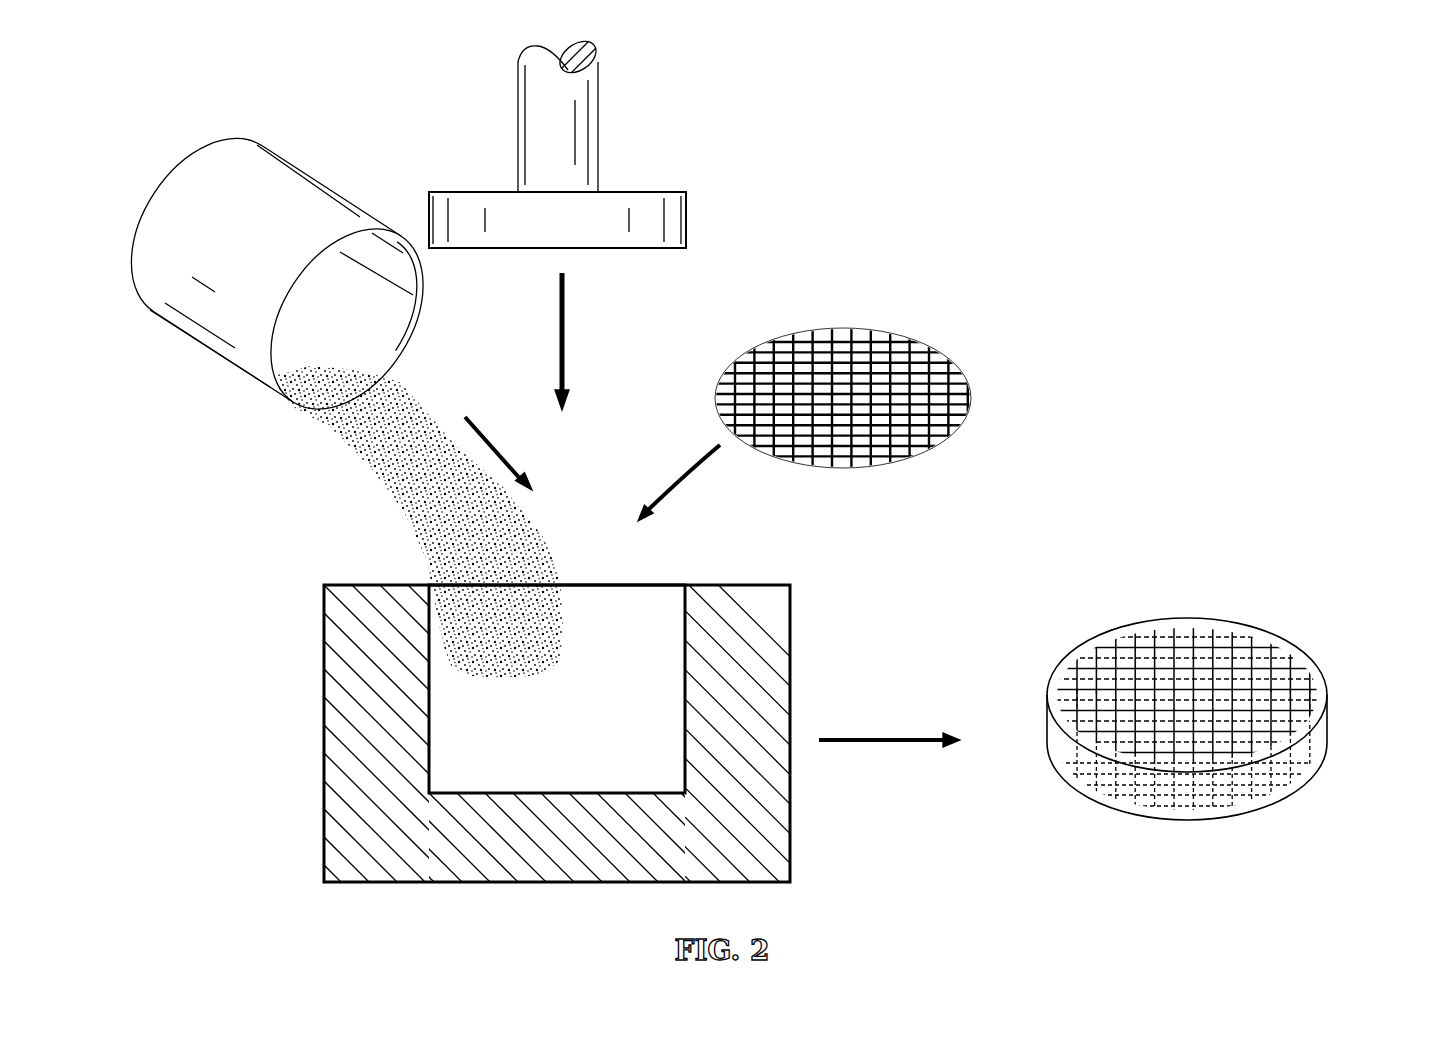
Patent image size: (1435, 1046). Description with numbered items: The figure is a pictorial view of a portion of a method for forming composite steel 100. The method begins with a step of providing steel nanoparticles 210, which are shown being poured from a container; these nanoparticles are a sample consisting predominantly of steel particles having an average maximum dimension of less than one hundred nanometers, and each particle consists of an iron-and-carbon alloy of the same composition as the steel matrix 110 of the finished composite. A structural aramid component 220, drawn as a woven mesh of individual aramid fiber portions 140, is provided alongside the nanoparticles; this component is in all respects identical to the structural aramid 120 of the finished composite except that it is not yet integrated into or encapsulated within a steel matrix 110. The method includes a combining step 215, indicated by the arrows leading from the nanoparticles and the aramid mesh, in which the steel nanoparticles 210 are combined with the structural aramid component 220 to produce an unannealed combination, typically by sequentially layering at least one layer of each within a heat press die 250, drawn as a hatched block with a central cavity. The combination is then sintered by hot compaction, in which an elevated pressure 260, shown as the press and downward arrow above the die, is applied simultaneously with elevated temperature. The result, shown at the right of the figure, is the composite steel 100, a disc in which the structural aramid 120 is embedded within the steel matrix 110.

The composite steel 100 is at (1224, 651).
The steel matrix 110 is at (1322, 733).
The structural aramid 120 is at (1258, 640).
The aramid fiber portion 140 is at (795, 342).
The steel nanoparticles 210 is at (408, 397).
The combining step 215 is at (670, 467).
The structural aramid component 220 is at (846, 361).
The heat press die 250 is at (324, 738).
The elevated pressure 260 is at (566, 325).